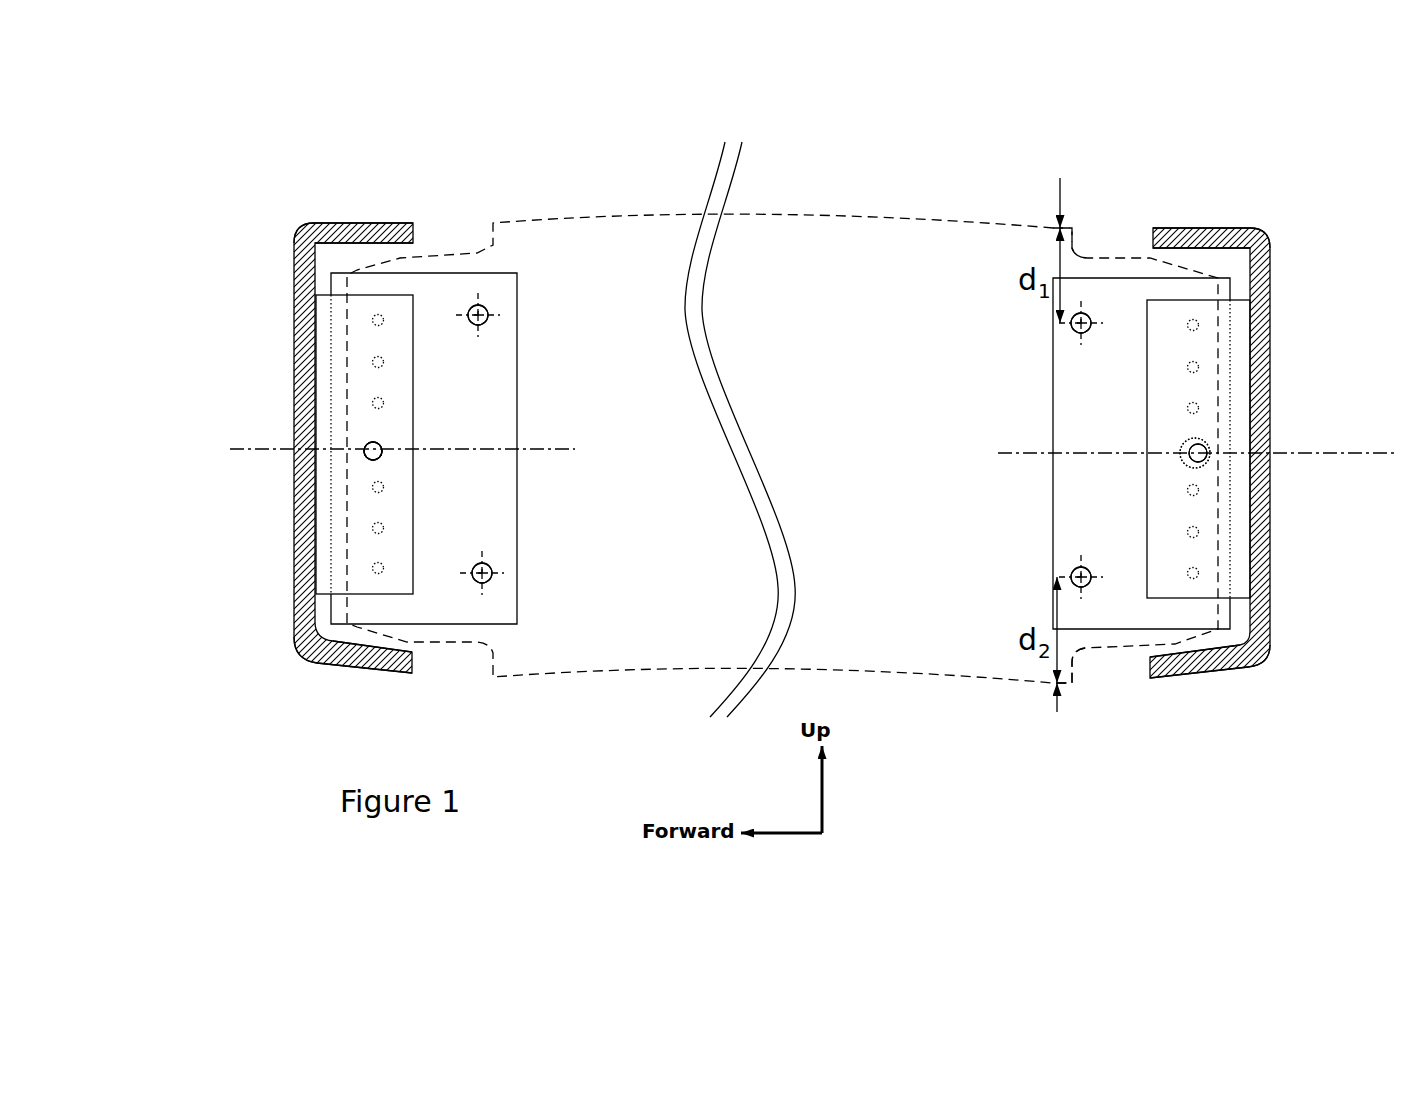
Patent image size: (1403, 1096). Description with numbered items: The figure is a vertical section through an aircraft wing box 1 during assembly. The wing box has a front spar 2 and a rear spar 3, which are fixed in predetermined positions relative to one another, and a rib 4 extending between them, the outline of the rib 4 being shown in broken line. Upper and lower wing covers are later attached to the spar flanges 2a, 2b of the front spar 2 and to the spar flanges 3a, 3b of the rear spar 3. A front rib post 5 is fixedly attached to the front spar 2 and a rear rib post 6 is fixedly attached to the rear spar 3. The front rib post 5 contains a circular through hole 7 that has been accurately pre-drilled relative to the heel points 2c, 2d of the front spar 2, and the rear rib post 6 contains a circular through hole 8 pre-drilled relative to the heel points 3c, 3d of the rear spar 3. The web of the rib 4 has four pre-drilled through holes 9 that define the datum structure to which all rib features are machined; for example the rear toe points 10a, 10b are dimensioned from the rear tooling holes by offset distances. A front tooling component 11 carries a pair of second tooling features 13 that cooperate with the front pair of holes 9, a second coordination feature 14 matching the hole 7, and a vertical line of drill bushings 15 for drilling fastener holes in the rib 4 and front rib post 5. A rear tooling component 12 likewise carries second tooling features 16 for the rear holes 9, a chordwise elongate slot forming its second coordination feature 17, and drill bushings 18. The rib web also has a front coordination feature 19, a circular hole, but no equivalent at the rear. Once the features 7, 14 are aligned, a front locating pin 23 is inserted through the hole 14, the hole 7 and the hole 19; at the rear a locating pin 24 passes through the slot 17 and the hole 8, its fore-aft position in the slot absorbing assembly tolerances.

The aircraft wing box 1 is at (1178, 185).
The front spar 2 is at (352, 225).
The spar flange 2a is at (403, 222).
The spar flange 2b is at (397, 672).
The upper heel point 2c is at (310, 230).
The heel point 2d is at (308, 668).
The rear spar 3 is at (1232, 232).
The spar flange 3a is at (1167, 228).
The spar flange 3b is at (1165, 680).
The heel point 3c is at (1253, 233).
The heel point 3d is at (1248, 672).
The rib 4 is at (867, 255).
The front rib post 5 is at (320, 573).
The rear rib post 6 is at (1240, 545).
The circular through hole 7 is at (370, 440).
The circular through hole 8 is at (1203, 443).
The through hole 9 is at (489, 312).
The rear toe point 10a is at (1075, 215).
The rear toe point 10b is at (1072, 693).
The front tooling component 11 is at (507, 482).
The rear tooling component 12 is at (1075, 433).
The second tooling features 13 is at (605, 255).
The second coordination feature 14 is at (370, 440).
The drill bushings 15 is at (384, 402).
The second tooling features 16 is at (1069, 329).
The second coordination feature 17 is at (1203, 443).
The drill bushings 18 is at (1187, 365).
The front coordination feature 19 is at (362, 452).
The front locating pin 23 is at (364, 440).
The rear locating pin 24 is at (1207, 458).